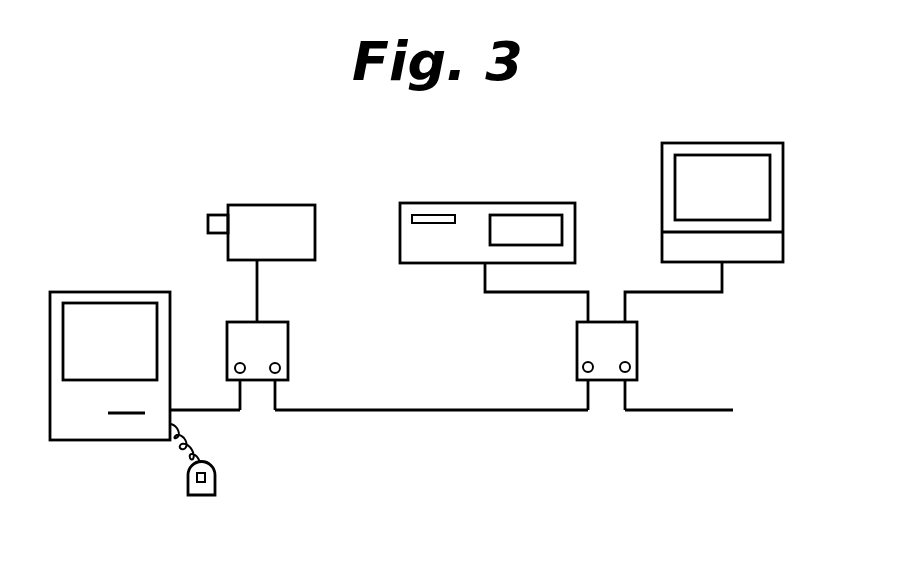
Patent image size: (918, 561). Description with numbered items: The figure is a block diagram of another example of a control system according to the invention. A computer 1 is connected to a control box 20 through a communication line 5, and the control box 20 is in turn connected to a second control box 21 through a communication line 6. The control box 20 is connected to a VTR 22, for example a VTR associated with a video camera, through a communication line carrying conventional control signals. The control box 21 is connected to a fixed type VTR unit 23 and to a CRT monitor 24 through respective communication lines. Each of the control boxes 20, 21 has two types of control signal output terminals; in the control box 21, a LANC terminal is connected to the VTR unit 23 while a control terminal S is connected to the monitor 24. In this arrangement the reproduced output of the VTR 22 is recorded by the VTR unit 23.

The computer 1 is at (108, 292).
The communication line 5 is at (230, 411).
The communication line 6 is at (437, 411).
The control box 20 is at (288, 354).
The control box 21 is at (637, 357).
The VTR 22 is at (315, 241).
The fixed type VTR unit 23 is at (445, 263).
The CRT monitor 24 is at (758, 262).